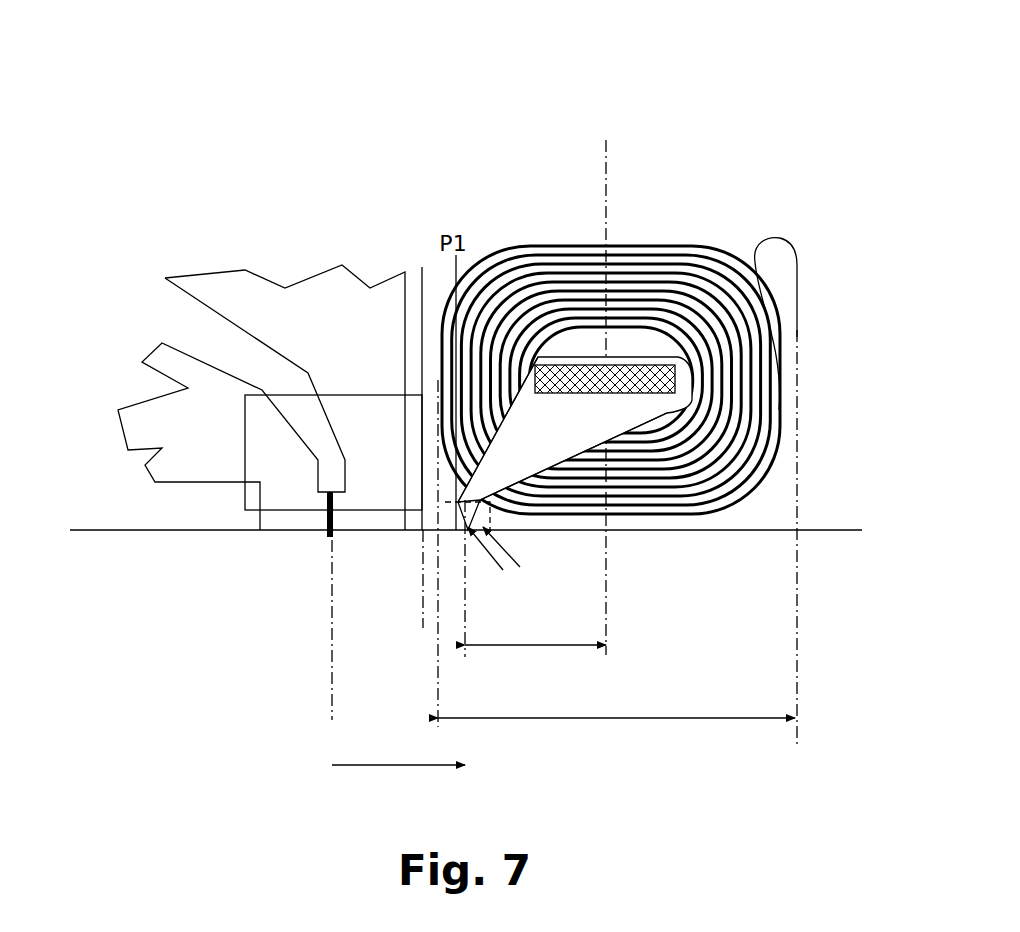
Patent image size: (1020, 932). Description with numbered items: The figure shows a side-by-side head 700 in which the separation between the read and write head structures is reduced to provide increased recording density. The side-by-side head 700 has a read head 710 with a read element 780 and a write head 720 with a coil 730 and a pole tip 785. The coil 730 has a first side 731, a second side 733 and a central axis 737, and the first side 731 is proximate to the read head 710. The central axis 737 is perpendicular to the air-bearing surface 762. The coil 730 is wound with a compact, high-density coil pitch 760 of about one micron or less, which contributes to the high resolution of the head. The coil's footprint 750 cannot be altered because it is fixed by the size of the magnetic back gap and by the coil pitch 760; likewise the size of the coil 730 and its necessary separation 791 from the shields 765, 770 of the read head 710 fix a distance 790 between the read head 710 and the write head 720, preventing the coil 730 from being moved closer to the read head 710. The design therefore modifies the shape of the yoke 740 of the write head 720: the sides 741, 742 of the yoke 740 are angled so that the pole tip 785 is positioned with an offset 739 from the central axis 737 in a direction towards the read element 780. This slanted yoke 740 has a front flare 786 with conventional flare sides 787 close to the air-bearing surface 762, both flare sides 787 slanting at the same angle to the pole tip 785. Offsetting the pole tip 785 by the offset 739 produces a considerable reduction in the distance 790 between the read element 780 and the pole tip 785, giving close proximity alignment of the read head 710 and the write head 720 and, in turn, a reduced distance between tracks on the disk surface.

The side-by-side head 700 is at (620, 70).
The read head 710 is at (287, 275).
The write head 720 is at (645, 451).
The coil 730 is at (680, 247).
The first side 731 is at (437, 377).
The second side 733 is at (780, 388).
The central axis 737 is at (607, 198).
The offset 739 is at (535, 647).
The yoke 740 is at (575, 443).
The side of yoke 741 is at (480, 468).
The side of yoke 742 is at (665, 410).
The footprint 750 is at (667, 722).
The coil pitch 760 is at (688, 470).
The air-bearing surface 762 is at (823, 529).
The shield 765 is at (358, 394).
The shield 770 is at (412, 303).
The read element 780 is at (327, 517).
The pole tip 785 is at (467, 535).
The front flare 786 is at (492, 508).
The flare sides 787 is at (509, 561).
The distance 790 is at (395, 767).
The separation 791 is at (433, 618).